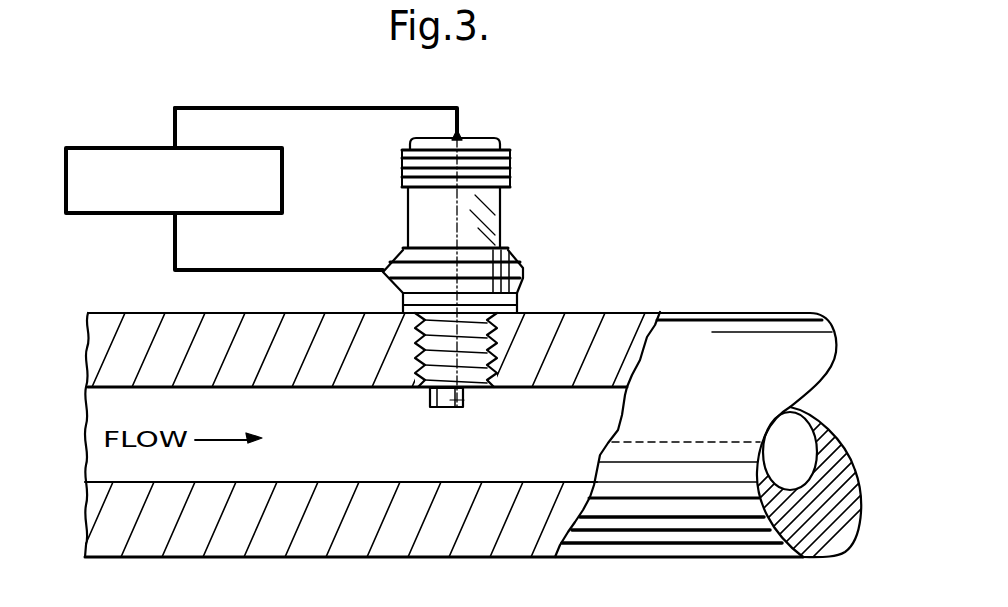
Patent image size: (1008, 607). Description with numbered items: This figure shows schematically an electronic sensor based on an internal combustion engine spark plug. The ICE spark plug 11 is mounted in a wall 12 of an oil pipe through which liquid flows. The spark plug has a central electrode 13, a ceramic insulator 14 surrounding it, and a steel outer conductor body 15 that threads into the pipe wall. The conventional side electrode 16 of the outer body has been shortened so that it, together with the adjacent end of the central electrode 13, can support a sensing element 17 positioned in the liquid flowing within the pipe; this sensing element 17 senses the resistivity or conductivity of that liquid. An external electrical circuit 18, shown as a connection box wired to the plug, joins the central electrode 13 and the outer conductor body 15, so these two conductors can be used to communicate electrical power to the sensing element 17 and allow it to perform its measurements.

The ICE spark plug 11 is at (339, 267).
The wall of an oil pipe 12 is at (688, 357).
The central electrode 13 is at (473, 220).
The ceramic insulator 14 is at (480, 200).
The steel outer conductor body 15 is at (520, 271).
The side electrode 16 is at (430, 398).
The sensing element 17 is at (446, 407).
The external electrical circuit 18 is at (287, 107).